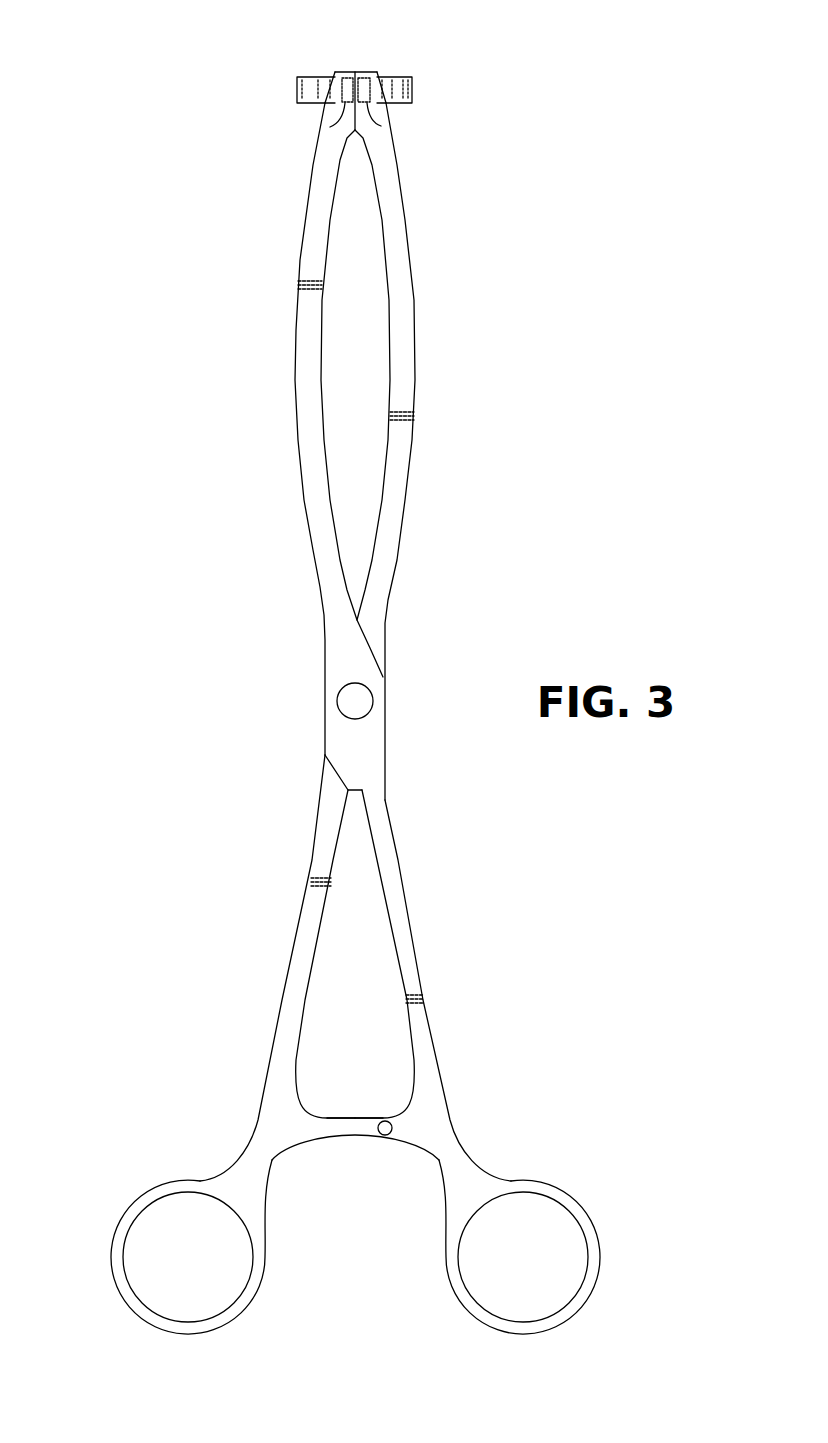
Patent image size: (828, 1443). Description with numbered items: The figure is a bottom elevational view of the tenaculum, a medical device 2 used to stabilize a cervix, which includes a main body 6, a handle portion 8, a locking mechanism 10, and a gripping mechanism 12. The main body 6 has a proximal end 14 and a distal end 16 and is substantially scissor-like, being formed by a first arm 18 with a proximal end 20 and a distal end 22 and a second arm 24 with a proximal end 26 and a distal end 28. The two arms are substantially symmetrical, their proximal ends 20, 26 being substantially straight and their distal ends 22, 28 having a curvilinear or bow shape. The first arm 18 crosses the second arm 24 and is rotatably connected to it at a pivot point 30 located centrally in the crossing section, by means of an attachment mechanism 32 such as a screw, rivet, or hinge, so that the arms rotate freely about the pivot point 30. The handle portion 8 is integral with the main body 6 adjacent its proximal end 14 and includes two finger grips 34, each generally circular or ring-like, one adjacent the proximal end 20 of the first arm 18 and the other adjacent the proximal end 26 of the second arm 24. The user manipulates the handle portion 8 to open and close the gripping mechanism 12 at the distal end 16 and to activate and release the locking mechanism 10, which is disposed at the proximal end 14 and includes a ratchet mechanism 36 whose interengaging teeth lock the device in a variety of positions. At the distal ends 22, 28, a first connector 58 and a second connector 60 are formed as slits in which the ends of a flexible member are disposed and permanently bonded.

The medical device 2 is at (568, 83).
The main body 6 is at (432, 570).
The handle portion 8 is at (258, 1325).
The locking mechanism 10 is at (360, 1098).
The gripping mechanism 12 is at (392, 60).
The proximal end 14 is at (392, 1310).
The distal end 16 is at (272, 82).
The first arm 18 is at (307, 382).
The proximal end of the first arm 20 is at (287, 987).
The distal end of the first arm 22 is at (308, 258).
The second arm 24 is at (405, 382).
The proximal end of the second arm 26 is at (423, 982).
The distal end of the second arm 28 is at (400, 255).
The pivot point 30 is at (357, 700).
The attachment mechanism 32 is at (345, 683).
The finger grip 34 is at (158, 1328).
The ratchet mechanism 36 is at (358, 1130).
The first connector 58 is at (331, 127).
The second connector 60 is at (382, 125).